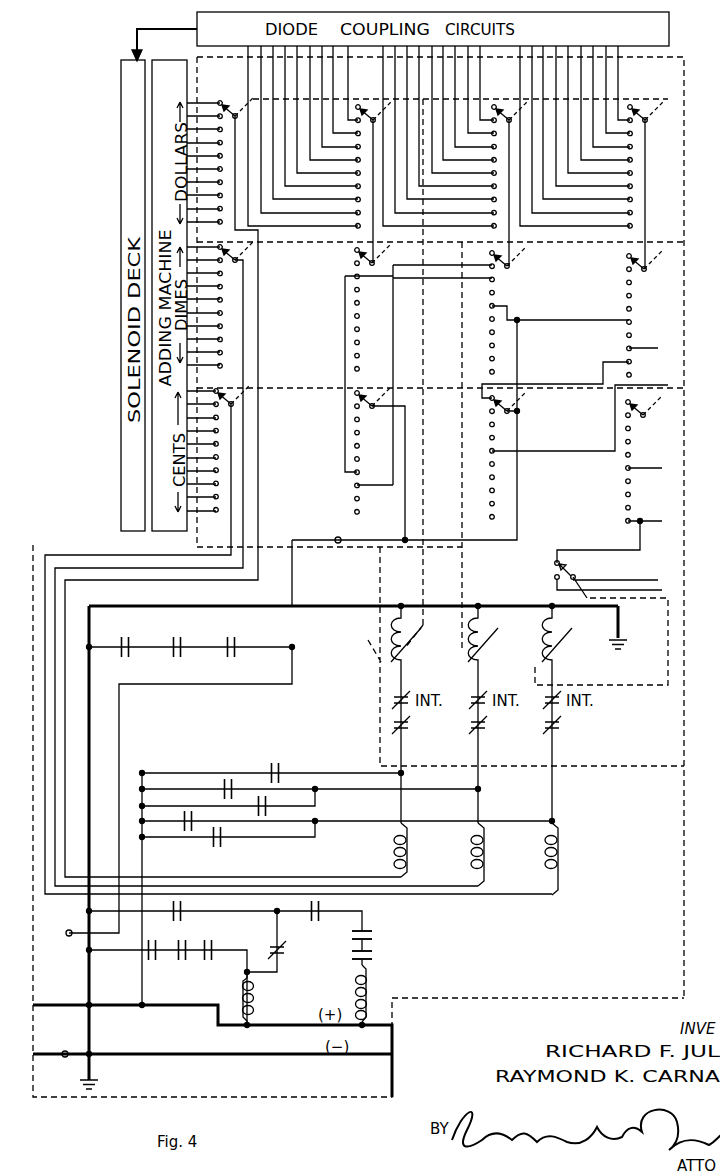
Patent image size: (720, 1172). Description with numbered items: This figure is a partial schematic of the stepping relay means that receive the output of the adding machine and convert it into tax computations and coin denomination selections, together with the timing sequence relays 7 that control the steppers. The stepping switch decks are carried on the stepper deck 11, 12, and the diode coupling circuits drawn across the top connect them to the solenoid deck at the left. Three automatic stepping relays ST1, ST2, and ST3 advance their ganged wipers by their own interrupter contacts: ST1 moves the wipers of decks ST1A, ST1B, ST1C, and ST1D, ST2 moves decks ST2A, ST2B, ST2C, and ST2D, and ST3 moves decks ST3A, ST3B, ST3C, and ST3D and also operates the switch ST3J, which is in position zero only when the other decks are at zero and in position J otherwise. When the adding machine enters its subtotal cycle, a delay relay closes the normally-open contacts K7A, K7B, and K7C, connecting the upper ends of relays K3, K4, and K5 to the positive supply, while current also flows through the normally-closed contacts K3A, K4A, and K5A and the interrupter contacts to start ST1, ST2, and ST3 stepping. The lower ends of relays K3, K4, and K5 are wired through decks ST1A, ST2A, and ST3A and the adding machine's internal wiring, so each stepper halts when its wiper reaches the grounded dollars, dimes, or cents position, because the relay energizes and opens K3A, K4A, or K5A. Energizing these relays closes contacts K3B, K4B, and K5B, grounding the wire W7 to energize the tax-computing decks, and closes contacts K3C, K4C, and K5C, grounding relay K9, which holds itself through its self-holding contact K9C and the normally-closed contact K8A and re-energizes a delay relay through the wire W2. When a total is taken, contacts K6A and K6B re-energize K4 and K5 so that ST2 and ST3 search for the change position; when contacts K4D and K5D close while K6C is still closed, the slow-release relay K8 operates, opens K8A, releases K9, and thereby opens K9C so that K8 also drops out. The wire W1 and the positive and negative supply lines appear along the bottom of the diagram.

The timing sequence relays 7 is at (618, 973).
The stepper deck 11 is at (313, 388).
The stepper deck 12 is at (334, 310).
The switch deck ST1A is at (233, 480).
The switch deck ST1B is at (320, 154).
The switch deck ST1C is at (455, 156).
The switch deck ST1D is at (592, 157).
The switch deck ST2A is at (266, 563).
The switch deck ST2B is at (418, 364).
The switch deck ST2C is at (460, 393).
The switch deck ST2D is at (582, 324).
The switch deck ST3A is at (298, 633).
The switch deck ST3B is at (381, 460).
The switch deck ST3C is at (579, 452).
The switch deck ST3D is at (611, 479).
The switch ST3J is at (563, 576).
The stepping relay ST1 is at (416, 648).
The stepping relay ST2 is at (493, 648).
The stepping relay ST3 is at (567, 648).
The wire W7 is at (337, 537).
The wire W2 is at (68, 936).
The terminal W1 is at (66, 1050).
The contact K3B is at (128, 638).
The contact K4B is at (183, 637).
The contact K5B is at (247, 639).
The normally-closed contact K3A is at (417, 731).
The normally-closed contact K4A is at (494, 731).
The normally-closed contact K5A is at (568, 731).
The relay K3 is at (413, 850).
The relay K4 is at (490, 854).
The relay K5 is at (564, 859).
The normally-open contact K7A is at (294, 769).
The normally-open contact K7B is at (244, 786).
The normally-open contact K7C is at (173, 825).
The contact K6A is at (280, 804).
The contact K6B is at (234, 842).
The self-holding contact K9C is at (193, 908).
The contact K4D is at (325, 925).
The contact K5D is at (378, 930).
The contact K6C is at (378, 955).
The relay K8 is at (374, 993).
The normally-closed contact K8A is at (292, 957).
The relay K9 is at (260, 998).
The contact K3C is at (161, 943).
The contact K4C is at (190, 960).
The contact K5C is at (225, 943).